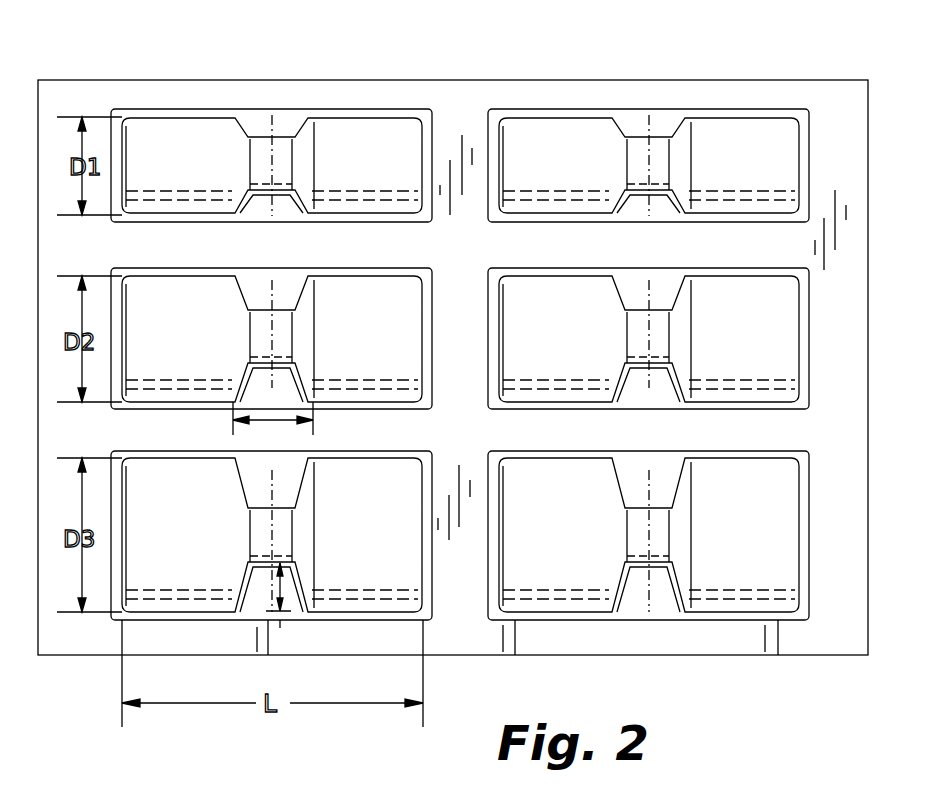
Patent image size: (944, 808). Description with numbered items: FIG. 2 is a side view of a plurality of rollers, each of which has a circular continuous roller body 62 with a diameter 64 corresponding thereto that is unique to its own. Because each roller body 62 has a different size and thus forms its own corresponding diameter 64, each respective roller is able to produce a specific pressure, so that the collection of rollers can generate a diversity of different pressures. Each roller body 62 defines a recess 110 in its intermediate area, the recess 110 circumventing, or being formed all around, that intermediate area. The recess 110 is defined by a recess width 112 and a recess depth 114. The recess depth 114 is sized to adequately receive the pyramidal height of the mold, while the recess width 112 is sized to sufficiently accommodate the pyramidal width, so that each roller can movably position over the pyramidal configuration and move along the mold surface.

The diameter 64 is at (63, 158).
The roller body 62 is at (180, 130).
The recess 110 is at (286, 126).
The recess width 112 is at (270, 421).
The recess depth 114 is at (283, 587).